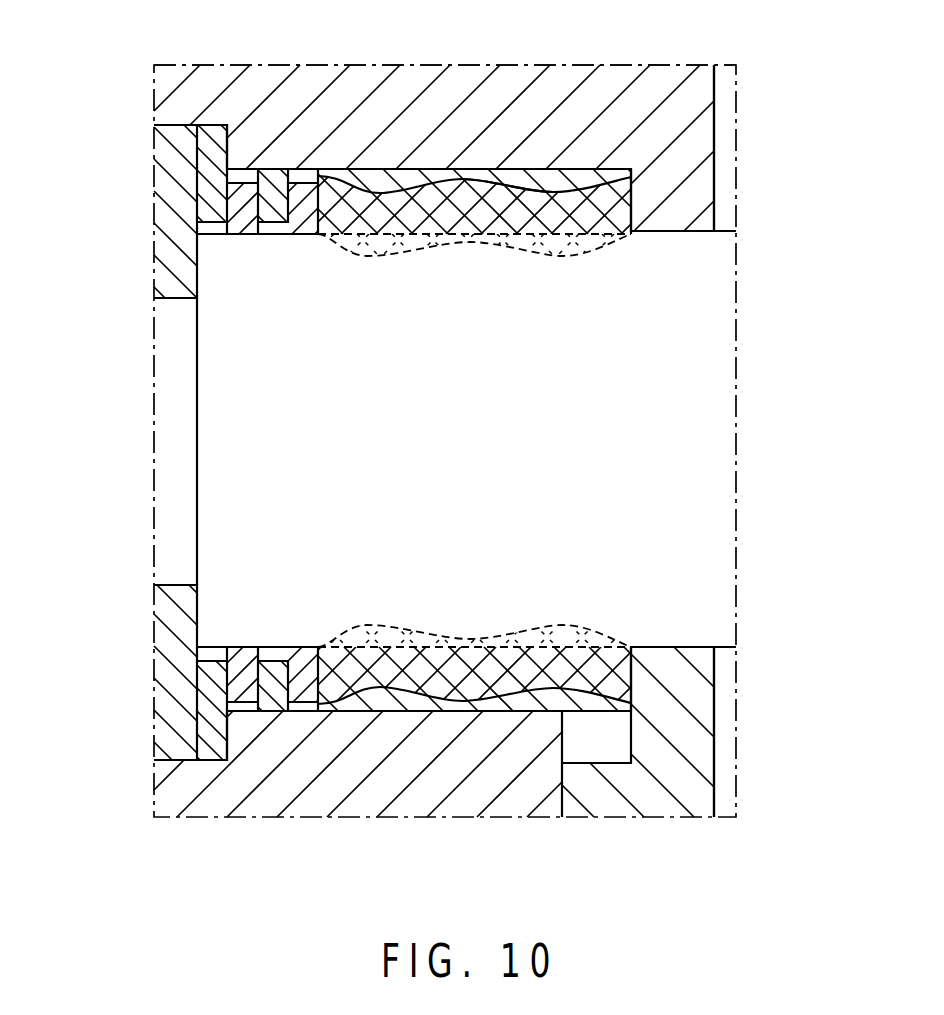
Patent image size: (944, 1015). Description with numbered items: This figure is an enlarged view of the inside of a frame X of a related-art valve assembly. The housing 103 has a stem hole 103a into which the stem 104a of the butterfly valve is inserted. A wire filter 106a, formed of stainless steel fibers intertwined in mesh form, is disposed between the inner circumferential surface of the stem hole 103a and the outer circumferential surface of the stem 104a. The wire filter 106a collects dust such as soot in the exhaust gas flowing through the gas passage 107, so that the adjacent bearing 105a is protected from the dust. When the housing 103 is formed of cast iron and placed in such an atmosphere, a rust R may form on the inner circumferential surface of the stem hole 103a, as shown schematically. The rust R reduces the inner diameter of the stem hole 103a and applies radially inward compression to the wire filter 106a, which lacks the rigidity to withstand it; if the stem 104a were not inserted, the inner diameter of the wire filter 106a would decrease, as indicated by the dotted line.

The housing 103 is at (333, 100).
The stem hole 103a is at (563, 168).
The stem 104a is at (502, 368).
The bearing 105a is at (167, 200).
The wire filter 106a is at (489, 202).
The gas passage 107 is at (714, 147).
The rust R is at (545, 175).
The frame X is at (187, 65).